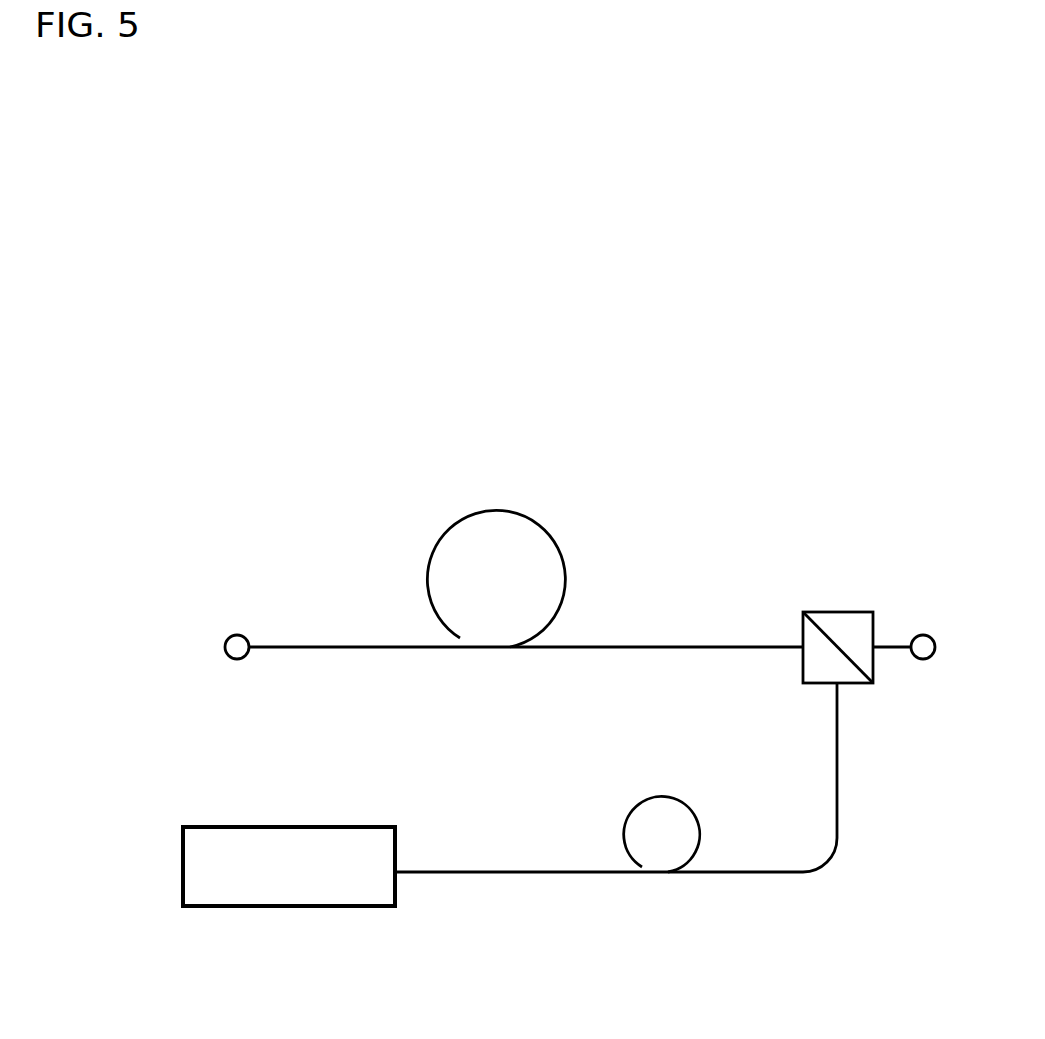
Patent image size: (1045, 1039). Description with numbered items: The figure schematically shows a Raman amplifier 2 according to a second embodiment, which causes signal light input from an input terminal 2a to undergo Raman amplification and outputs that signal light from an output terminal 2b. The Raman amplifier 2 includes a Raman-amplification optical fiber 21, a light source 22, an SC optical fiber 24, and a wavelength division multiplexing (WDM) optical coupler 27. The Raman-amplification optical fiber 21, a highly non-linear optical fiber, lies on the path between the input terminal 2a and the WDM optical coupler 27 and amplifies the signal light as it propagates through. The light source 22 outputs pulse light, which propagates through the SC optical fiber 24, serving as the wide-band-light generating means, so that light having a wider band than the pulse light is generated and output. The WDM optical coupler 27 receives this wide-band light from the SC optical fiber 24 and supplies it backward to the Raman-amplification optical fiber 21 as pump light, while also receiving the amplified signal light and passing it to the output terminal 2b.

The Raman amplifier 2 is at (667, 353).
The input terminal 2a is at (237, 635).
The output terminal 2b is at (925, 635).
The Raman-amplification optical fiber 21 is at (494, 512).
The light source 22 is at (310, 906).
The SC optical fiber 24 is at (660, 796).
The wavelength division multiplexing (WDM) optical coupler 27 is at (843, 612).